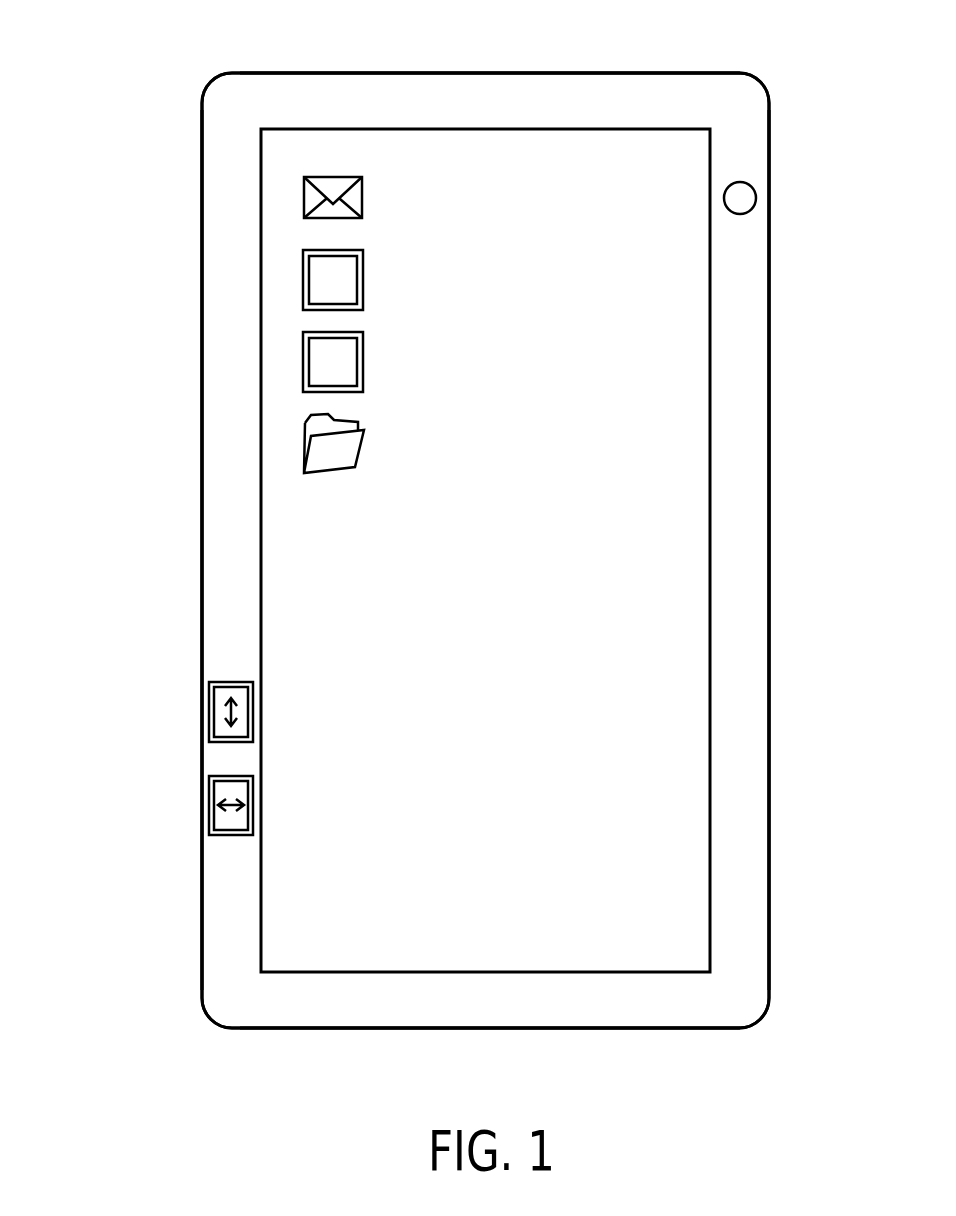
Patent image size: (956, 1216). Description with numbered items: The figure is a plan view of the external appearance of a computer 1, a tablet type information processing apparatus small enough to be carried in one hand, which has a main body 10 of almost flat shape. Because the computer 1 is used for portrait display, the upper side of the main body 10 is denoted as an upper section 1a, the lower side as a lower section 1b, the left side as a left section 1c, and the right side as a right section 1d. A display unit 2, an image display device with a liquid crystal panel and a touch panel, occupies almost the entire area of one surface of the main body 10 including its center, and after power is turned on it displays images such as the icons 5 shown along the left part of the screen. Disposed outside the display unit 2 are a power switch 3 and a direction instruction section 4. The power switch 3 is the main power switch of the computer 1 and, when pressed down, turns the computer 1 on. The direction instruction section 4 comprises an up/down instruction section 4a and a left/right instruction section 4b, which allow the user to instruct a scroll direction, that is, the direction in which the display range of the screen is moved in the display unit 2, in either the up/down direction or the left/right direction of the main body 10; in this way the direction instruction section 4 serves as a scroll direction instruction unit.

The computer 1 is at (744, 121).
The upper section 1a is at (327, 72).
The lower section 1b is at (668, 1030).
The left section 1c is at (202, 572).
The right section 1d is at (770, 588).
The display unit 2 is at (693, 262).
The power switch 3 is at (757, 197).
The direction instruction section 4 is at (164, 758).
The up/down instruction section 4a is at (209, 712).
The left/right instruction section 4b is at (188, 805).
The icons 5 is at (303, 200).
The main body 10 is at (770, 700).